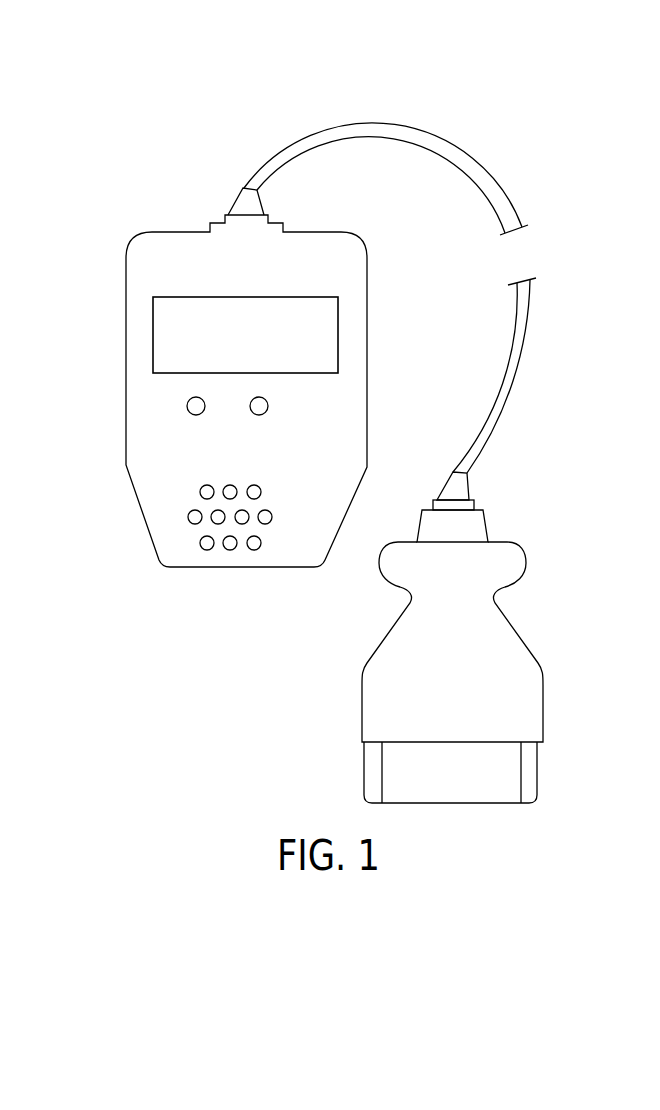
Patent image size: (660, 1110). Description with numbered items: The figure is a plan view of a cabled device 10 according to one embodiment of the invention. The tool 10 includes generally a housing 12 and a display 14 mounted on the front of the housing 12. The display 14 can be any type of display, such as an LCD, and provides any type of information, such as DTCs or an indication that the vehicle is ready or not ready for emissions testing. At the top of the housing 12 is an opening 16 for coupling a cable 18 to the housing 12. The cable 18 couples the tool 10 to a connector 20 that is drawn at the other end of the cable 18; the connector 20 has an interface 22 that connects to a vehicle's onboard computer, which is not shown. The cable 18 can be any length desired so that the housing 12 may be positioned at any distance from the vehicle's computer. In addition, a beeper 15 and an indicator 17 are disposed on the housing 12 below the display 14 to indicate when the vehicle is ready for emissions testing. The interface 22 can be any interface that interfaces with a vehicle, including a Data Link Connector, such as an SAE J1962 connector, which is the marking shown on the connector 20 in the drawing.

The cabled device 10 is at (133, 203).
The housing 12 is at (165, 482).
The display 14 is at (153, 330).
The beeper 15 is at (201, 542).
The opening 16 is at (262, 201).
The indicator 17 is at (192, 415).
The cable 18 is at (441, 137).
The connector 20 is at (525, 553).
The interface 22 is at (537, 767).